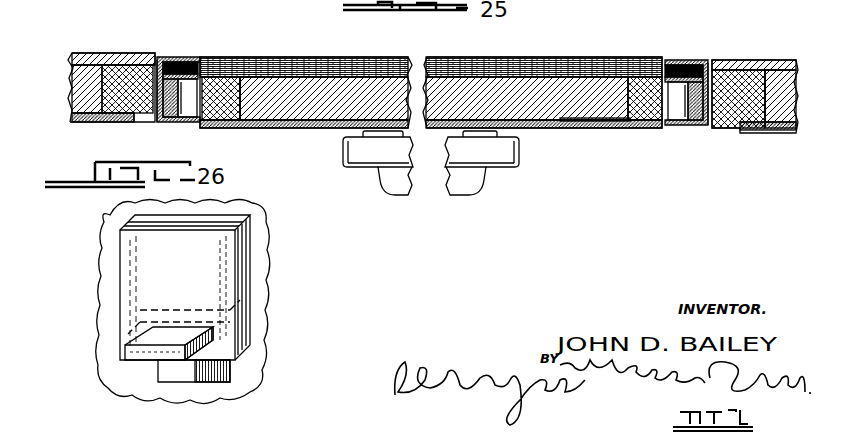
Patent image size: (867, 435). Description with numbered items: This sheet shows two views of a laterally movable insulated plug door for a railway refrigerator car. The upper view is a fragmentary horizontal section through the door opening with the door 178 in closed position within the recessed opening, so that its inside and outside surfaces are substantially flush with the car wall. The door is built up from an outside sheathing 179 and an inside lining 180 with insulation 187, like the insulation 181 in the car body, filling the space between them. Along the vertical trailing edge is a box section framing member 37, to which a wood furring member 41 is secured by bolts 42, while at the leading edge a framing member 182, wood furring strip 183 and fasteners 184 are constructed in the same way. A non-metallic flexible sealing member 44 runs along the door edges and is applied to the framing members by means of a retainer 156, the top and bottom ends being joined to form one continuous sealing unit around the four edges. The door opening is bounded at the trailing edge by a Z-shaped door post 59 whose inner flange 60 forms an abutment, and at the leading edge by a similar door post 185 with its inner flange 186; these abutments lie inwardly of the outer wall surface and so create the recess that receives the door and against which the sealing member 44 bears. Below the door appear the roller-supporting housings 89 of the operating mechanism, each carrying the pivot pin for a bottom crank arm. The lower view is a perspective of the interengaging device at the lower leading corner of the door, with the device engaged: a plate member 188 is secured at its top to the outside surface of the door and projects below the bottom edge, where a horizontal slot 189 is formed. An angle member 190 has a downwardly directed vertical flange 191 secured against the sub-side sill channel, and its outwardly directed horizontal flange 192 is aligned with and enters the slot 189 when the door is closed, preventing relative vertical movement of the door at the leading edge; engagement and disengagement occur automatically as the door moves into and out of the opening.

In FIG. 25, the vertical trailing edge framing member 37 is at (190, 110).
In FIG. 25, the wood furring member 41 is at (285, 60).
In FIG. 25, the bolt 42 is at (252, 64).
In FIG. 25, the sealing member 44 is at (192, 62).
In FIG. 25, the door post 59 is at (148, 80).
In FIG. 25, the inner flange of door post 60 is at (170, 57).
In FIG. 25, the roller-supporting housing 89 is at (360, 170).
In FIG. 25, the retainer 156 is at (160, 122).
In FIG. 25, the door 178 is at (487, 60).
In FIG. 25, the outside sheathing 179 is at (325, 122).
In FIG. 25, the inside lining 180 is at (342, 60).
In FIG. 25, the insulation 181 is at (72, 106).
In FIG. 25, the leading edge framing member 182 is at (677, 120).
In FIG. 25, the wood furring strip 183 is at (590, 93).
In FIG. 25, the fastener 184 is at (592, 108).
In FIG. 25, the door post 185 is at (750, 64).
In FIG. 25, the inner flange of door post 186 is at (703, 64).
In FIG. 25, the insulation 187 is at (415, 60).
In FIG. 26, the insulation 187 is at (120, 295).
In FIG. 26, the plate member 188 is at (222, 290).
In FIG. 26, the horizontal slot 189 is at (180, 336).
In FIG. 26, the angle member 190 is at (236, 222).
In FIG. 26, the vertical flange 191 is at (208, 376).
In FIG. 26, the horizontal flange 192 is at (137, 340).